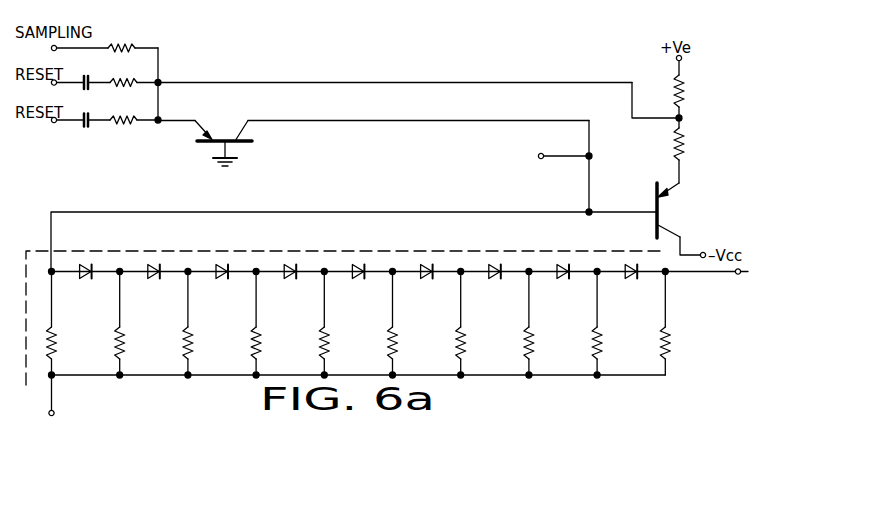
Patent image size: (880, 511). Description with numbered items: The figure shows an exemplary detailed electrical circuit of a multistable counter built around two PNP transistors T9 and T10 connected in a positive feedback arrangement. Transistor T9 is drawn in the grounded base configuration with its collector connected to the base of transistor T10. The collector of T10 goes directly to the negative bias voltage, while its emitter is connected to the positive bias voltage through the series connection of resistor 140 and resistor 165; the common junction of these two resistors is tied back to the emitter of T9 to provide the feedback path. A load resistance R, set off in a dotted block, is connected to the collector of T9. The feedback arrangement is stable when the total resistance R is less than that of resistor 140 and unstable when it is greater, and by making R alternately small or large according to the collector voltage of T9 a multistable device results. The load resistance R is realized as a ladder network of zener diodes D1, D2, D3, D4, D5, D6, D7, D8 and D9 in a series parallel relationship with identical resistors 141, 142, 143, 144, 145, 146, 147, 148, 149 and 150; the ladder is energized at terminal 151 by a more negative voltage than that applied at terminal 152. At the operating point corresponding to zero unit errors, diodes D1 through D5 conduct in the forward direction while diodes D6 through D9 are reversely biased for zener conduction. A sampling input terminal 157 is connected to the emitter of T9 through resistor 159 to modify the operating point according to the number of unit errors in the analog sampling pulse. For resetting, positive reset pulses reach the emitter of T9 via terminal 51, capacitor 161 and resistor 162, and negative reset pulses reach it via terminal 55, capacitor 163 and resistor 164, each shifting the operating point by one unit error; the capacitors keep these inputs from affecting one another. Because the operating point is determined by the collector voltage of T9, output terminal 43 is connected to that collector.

The output terminal 43 is at (535, 157).
The terminal 51 is at (52, 84).
The terminal 55 is at (52, 122).
The resistor 140 is at (686, 137).
The resistor 141 is at (56, 345).
The resistor 142 is at (124, 345).
The resistor 143 is at (192, 345).
The resistor 144 is at (261, 345).
The resistor 145 is at (329, 345).
The resistor 146 is at (397, 345).
The resistor 147 is at (465, 345).
The resistor 148 is at (533, 345).
The resistor 149 is at (602, 345).
The resistor 150 is at (670, 345).
The terminal 151 is at (668, 275).
The terminal 152 is at (738, 275).
The input terminal 157 is at (57, 50).
The resistor 159 is at (140, 46).
The capacitor 161 is at (97, 80).
The resistor 162 is at (139, 80).
The capacitor 163 is at (100, 113).
The resistor 164 is at (138, 123).
The resistor 165 is at (685, 92).
The load resistance R is at (118, 251).
The transistor T9 is at (223, 140).
The transistor T10 is at (678, 219).
The zener diode D1 is at (83, 279).
The zener diode D2 is at (151, 279).
The zener diode D3 is at (219, 279).
The zener diode D4 is at (288, 279).
The zener diode D5 is at (356, 279).
The zener diode D6 is at (424, 279).
The zener diode D7 is at (492, 279).
The zener diode D8 is at (561, 279).
The zener diode D9 is at (629, 279).